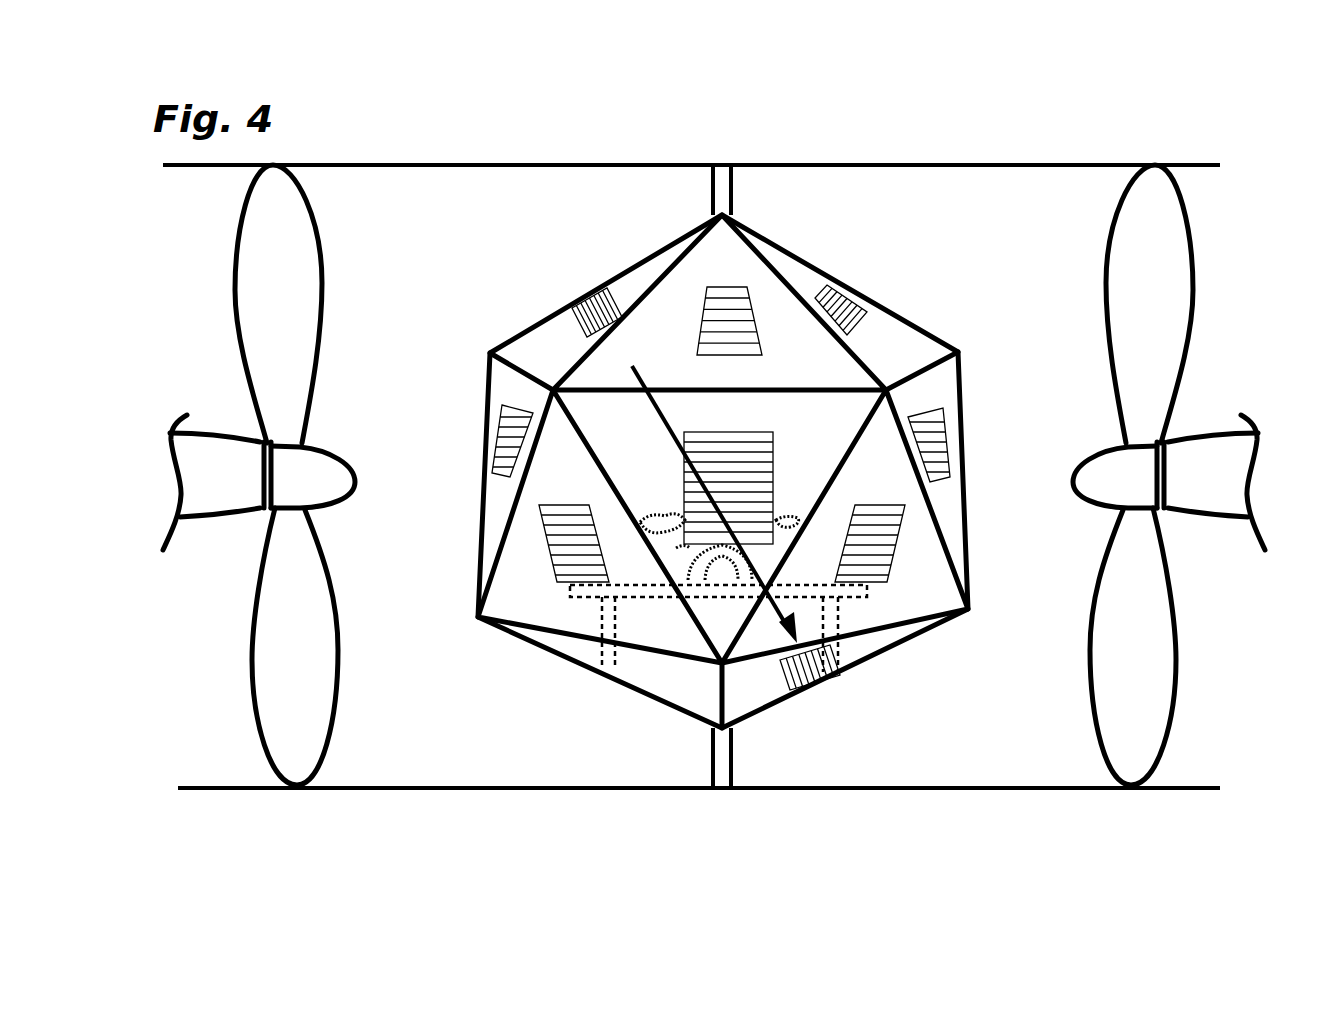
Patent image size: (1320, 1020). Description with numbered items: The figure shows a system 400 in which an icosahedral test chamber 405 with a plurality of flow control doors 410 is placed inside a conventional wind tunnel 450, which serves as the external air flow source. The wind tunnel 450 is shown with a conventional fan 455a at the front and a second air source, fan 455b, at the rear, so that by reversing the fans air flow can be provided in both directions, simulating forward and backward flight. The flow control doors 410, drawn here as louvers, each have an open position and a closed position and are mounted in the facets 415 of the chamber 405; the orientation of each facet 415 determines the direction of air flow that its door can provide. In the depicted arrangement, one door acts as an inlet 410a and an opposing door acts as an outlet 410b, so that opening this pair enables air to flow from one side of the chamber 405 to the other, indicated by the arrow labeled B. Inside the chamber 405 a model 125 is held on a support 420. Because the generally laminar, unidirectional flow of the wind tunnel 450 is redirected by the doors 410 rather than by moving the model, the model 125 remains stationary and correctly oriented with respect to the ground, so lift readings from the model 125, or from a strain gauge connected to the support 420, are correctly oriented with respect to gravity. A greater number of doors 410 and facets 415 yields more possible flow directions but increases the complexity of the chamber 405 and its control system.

The system 400 is at (487, 146).
The wind tunnel 450 is at (843, 193).
The fan 455a is at (323, 278).
The second fan 455b is at (1112, 240).
The chamber 405 is at (892, 352).
The flow control doors 410 is at (735, 285).
The inlet 410a is at (572, 308).
The outlet 410b is at (788, 700).
The facet 415 is at (502, 392).
The model 125 is at (788, 518).
The support 420 is at (853, 597).